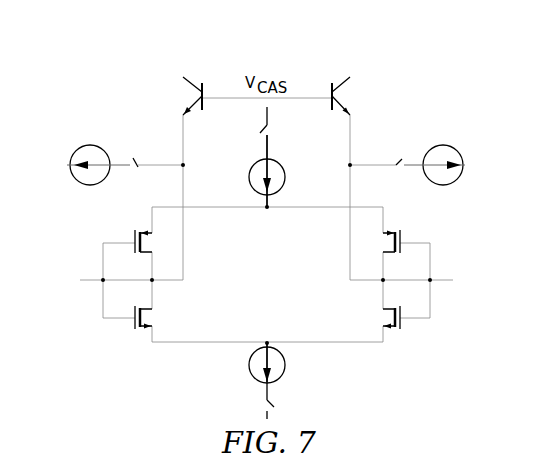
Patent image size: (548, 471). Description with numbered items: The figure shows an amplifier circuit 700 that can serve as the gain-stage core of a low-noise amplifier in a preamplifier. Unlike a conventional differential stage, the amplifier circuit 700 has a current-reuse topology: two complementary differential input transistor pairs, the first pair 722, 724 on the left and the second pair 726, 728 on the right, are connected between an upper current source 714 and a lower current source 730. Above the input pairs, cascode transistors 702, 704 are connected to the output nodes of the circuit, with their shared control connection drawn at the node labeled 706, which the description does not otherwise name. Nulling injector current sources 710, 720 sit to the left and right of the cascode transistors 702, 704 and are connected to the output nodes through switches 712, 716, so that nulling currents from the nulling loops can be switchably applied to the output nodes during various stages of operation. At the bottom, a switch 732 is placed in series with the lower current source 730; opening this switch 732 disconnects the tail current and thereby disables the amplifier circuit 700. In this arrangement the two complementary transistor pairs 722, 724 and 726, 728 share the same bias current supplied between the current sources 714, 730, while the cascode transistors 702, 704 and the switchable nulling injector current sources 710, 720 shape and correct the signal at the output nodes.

The amplifier circuit 700 is at (408, 58).
The cascode transistor 702 is at (205, 88).
The cascode transistor 704 is at (329, 88).
The bias voltage input terminal 706 is at (262, 130).
The nulling injector current source 710 is at (77, 152).
The switch 712 is at (140, 158).
The current source 714 is at (280, 160).
The switch 716 is at (395, 160).
The nulling injector current source 720 is at (457, 148).
The differential input transistor 722 is at (135, 232).
The differential input transistor 724 is at (152, 335).
The differential input transistor 726 is at (400, 232).
The differential input transistor 728 is at (383, 335).
The current source 730 is at (250, 373).
The switch 732 is at (272, 402).